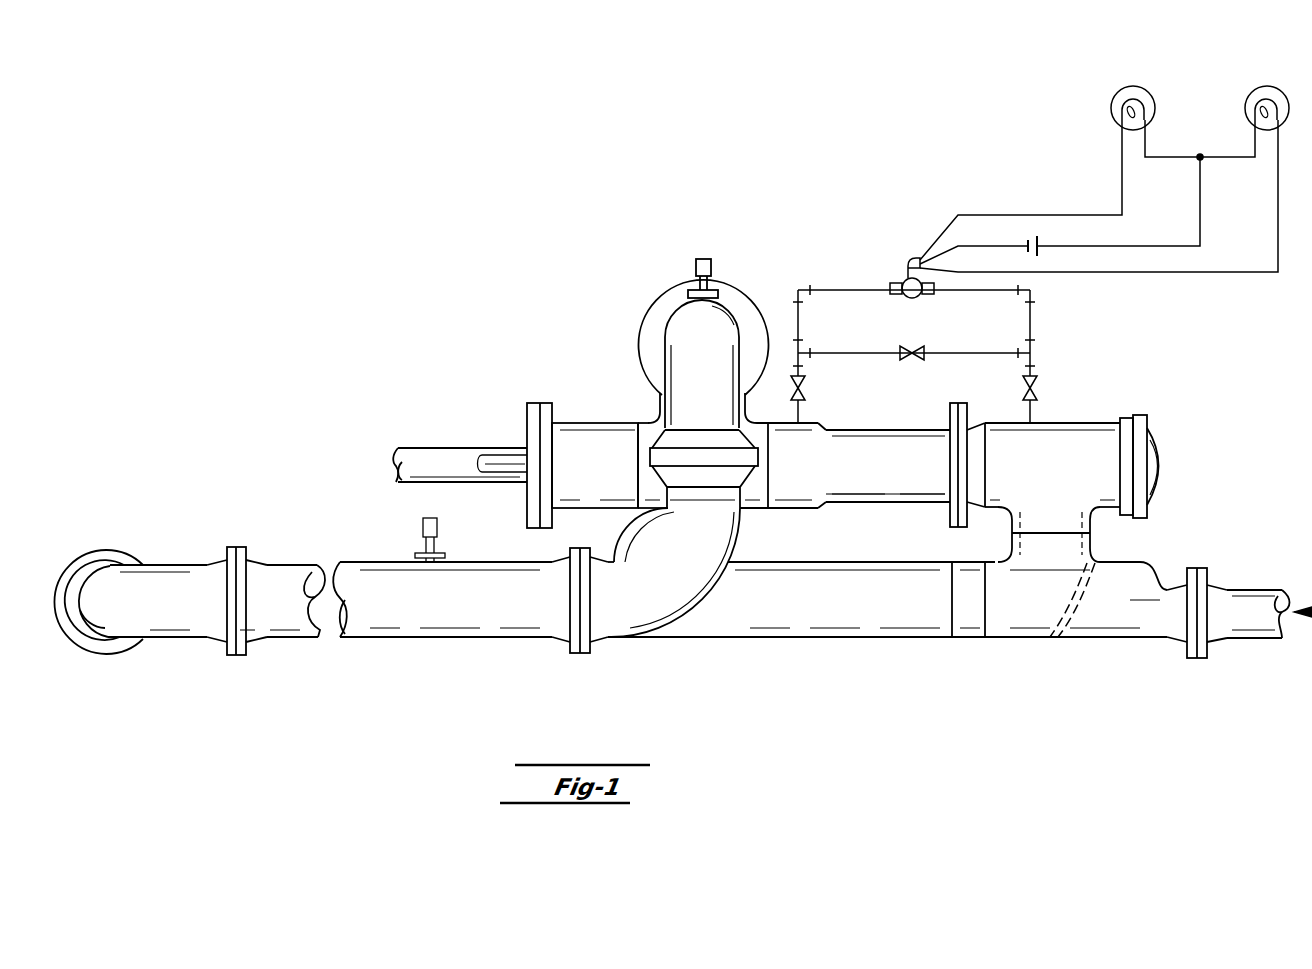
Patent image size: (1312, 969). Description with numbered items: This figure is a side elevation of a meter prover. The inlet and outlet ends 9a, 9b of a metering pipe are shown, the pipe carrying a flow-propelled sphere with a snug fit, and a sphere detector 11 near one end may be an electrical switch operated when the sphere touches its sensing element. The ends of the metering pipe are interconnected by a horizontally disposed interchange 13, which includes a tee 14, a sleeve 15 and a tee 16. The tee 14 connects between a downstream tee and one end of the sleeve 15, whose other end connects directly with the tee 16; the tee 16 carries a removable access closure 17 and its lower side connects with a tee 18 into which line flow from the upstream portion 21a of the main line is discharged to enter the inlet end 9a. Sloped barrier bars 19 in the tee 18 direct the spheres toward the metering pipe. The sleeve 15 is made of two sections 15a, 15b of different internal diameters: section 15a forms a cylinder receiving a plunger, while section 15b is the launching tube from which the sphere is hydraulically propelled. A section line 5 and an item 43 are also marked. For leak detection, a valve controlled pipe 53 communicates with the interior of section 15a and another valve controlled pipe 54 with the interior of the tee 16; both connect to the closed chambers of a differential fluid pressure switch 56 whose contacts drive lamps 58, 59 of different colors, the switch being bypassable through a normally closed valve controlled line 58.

The section line 5- 5 is at (604, 384).
The inlet end of metering pipe 9a is at (893, 585).
The outlet end of metering pipe 9b is at (535, 578).
The sphere detector 11 is at (423, 526).
The interchange 13 is at (909, 412).
The tee 14 is at (645, 430).
The sleeve 15 is at (846, 440).
The sleeve section 15a is at (800, 505).
The sleeve section 15b is at (890, 490).
The tee 16 is at (1080, 430).
The removable access closure 17 is at (1162, 470).
The tee 18 is at (1008, 628).
The barrier bars 19 is at (1078, 640).
The upstream portion of main flow line 21a is at (1258, 602).
The inner tube 43 is at (500, 462).
The valve controlled pipe 53 is at (798, 310).
The valve controlled pipe 54 is at (1034, 328).
The differential fluid pressure switch 56 is at (905, 276).
The lamp / valve controlled bypass line 58 is at (998, 318).
The lamp 59 is at (1258, 102).